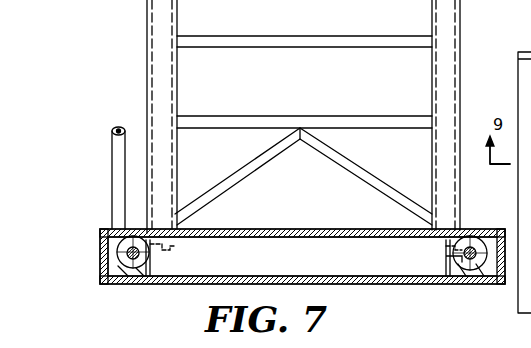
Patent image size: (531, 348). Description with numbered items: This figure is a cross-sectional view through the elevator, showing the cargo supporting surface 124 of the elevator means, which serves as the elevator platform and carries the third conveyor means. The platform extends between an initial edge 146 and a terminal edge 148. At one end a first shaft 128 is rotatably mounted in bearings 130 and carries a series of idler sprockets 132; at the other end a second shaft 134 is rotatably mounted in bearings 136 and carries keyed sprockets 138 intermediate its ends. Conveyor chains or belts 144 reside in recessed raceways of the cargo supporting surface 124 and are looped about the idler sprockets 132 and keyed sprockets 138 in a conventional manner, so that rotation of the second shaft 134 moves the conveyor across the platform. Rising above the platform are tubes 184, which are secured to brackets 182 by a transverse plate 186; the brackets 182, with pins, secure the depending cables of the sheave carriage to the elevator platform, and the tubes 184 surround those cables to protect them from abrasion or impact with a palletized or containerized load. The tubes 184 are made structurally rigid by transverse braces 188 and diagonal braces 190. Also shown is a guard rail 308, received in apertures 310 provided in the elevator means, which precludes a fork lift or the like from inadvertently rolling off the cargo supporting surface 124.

The tubes 184 is at (156, 22).
The transverse braces 188 is at (235, 117).
The diagonal braces 190 is at (333, 159).
The guard rail 308 is at (119, 127).
The cargo supporting surface 124 is at (232, 229).
The brackets 182 is at (184, 281).
The conveyor chains or belts 144 is at (302, 229).
The apertures 310 is at (104, 256).
The initial edge 146 is at (505, 280).
The terminal edge 148 is at (101, 232).
The bearings 130 is at (160, 261).
The idler sprockets 132 is at (137, 280).
The first shaft 128 is at (118, 283).
The transverse plate 186 is at (178, 249).
The second shaft 134 is at (455, 284).
The bearings 136 is at (480, 284).
The keyed sprockets 138 is at (484, 222).